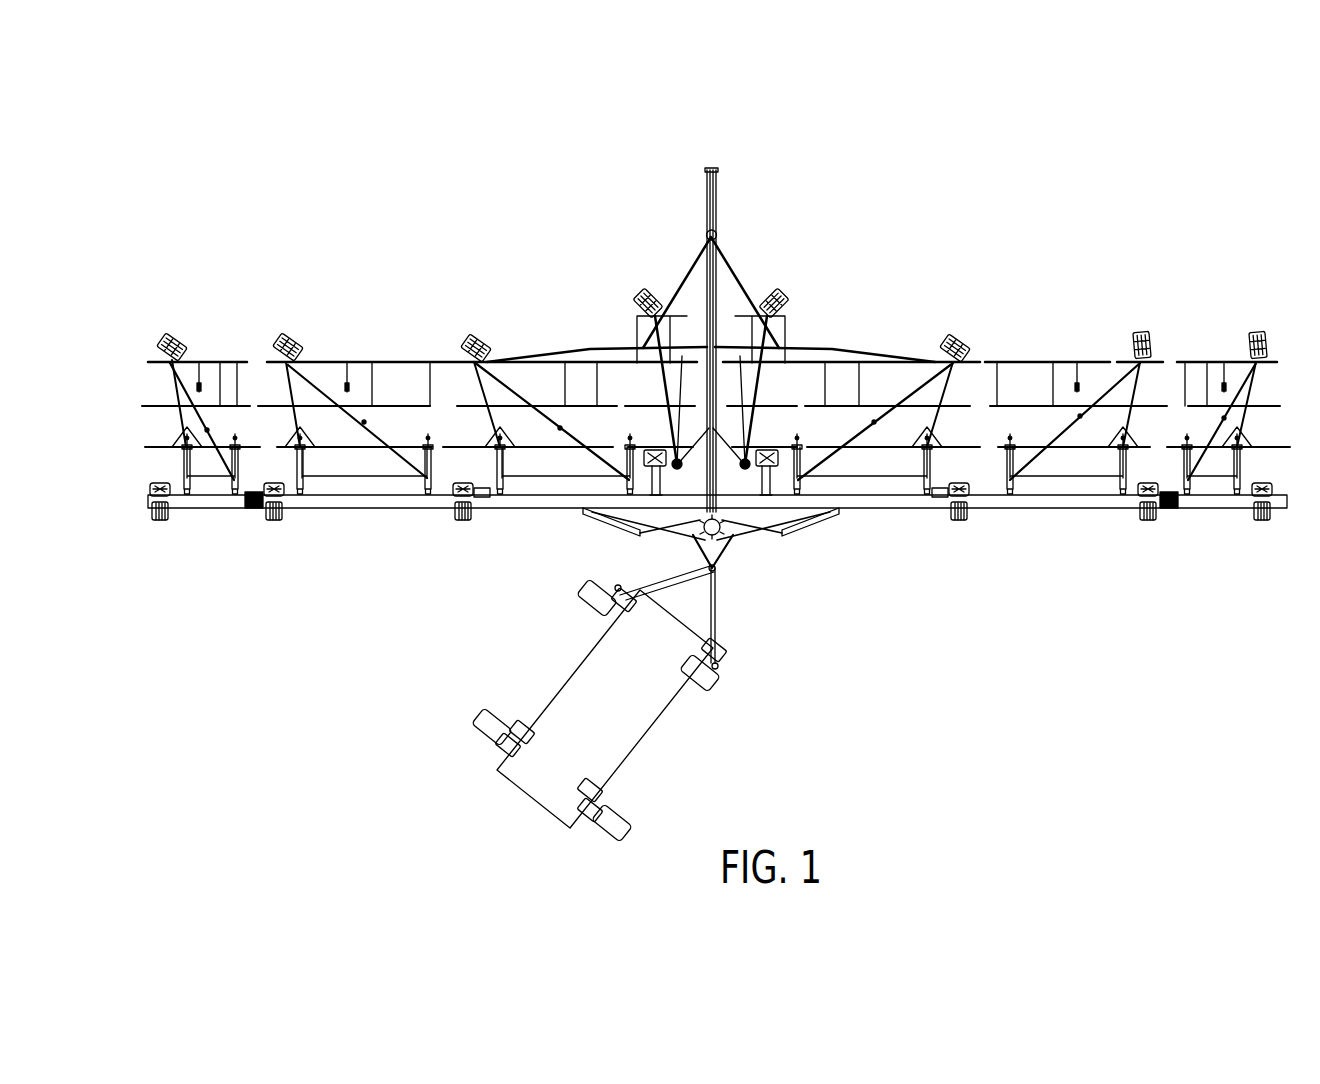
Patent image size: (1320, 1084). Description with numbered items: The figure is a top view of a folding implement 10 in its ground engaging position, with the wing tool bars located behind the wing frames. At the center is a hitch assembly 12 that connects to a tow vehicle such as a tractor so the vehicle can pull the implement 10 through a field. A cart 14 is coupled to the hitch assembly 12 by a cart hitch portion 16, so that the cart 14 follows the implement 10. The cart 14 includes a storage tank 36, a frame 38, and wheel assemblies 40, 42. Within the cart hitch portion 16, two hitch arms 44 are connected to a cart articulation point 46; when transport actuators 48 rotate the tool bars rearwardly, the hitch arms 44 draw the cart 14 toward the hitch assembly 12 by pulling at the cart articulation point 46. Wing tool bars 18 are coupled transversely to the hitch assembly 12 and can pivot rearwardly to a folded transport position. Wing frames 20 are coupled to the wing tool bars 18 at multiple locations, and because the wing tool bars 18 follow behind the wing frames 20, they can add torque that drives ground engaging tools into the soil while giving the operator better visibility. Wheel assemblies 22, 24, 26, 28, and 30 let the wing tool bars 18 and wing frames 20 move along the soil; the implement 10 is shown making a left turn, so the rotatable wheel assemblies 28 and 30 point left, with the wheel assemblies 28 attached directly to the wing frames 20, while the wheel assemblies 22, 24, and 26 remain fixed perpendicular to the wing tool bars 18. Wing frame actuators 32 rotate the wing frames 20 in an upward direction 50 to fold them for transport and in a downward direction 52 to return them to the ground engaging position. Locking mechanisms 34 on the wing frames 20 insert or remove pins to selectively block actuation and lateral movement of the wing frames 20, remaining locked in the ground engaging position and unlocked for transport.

The implement 10 is at (1157, 209).
The hitch assembly 12 is at (737, 185).
The cart 14 is at (611, 704).
The cart hitch portion 16 is at (709, 561).
The wing tool bars 18 is at (688, 452).
The wing frames 20 is at (243, 408).
The wheel assembly 22 is at (655, 451).
The wheel assembly 24 is at (460, 514).
The wheel assembly 26 is at (168, 514).
The wheel assembly 28 is at (170, 337).
The wheel assembly 30 is at (645, 291).
The wing frame actuators 32 is at (185, 462).
The locking mechanisms 34 is at (200, 376).
The storage tank 36 is at (640, 730).
The frame 38 is at (697, 625).
The wheel assembly 40 is at (602, 577).
The wheel assembly 42 is at (487, 717).
The hitch arms 44 is at (687, 542).
The cart articulation point 46 is at (702, 580).
The transport actuators 48 is at (612, 520).
The upward direction 50 is at (138, 511).
The downward direction 52 is at (131, 494).